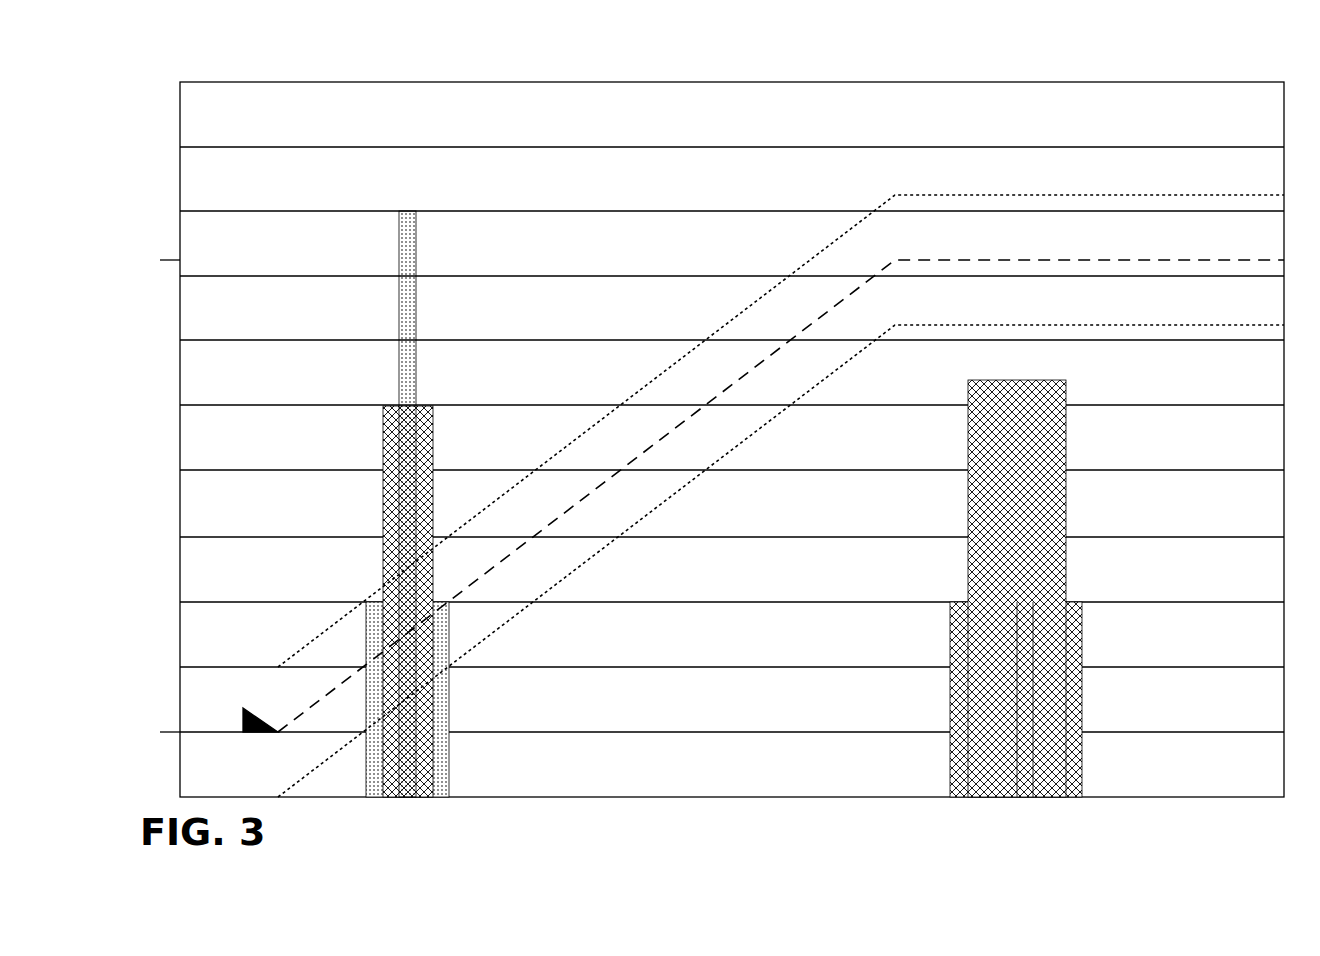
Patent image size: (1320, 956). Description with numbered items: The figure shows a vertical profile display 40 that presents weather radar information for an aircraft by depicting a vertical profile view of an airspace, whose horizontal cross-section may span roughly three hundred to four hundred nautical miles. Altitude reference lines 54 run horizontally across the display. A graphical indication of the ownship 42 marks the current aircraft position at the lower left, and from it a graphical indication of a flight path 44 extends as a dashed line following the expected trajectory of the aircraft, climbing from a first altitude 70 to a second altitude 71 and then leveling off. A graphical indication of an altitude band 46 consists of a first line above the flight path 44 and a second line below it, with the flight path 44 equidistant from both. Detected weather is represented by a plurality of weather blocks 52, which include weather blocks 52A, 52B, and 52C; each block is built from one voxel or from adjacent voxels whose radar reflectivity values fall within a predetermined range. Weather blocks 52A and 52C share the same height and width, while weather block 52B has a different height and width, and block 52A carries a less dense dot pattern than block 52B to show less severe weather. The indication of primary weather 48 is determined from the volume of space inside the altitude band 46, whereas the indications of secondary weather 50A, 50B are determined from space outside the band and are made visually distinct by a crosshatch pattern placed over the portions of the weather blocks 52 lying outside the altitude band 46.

The vertical profile display 40 is at (1178, 80).
The graphical indication of the ownship 42 is at (243, 708).
The graphical indication of a flight path 44 is at (1072, 259).
The graphical indication of an altitude band 46 is at (940, 196).
The indication of primary weather 48 is at (375, 600).
The indication of secondary weather 50A is at (407, 209).
The indication of secondary weather 50B is at (1006, 379).
The weather blocks 52 is at (948, 439).
The weather block 52A is at (413, 244).
The weather block 52B is at (1068, 453).
The weather block 52C is at (368, 655).
The altitude reference lines 54 is at (702, 143).
The first altitude 70 is at (156, 733).
The second altitude 71 is at (156, 261).